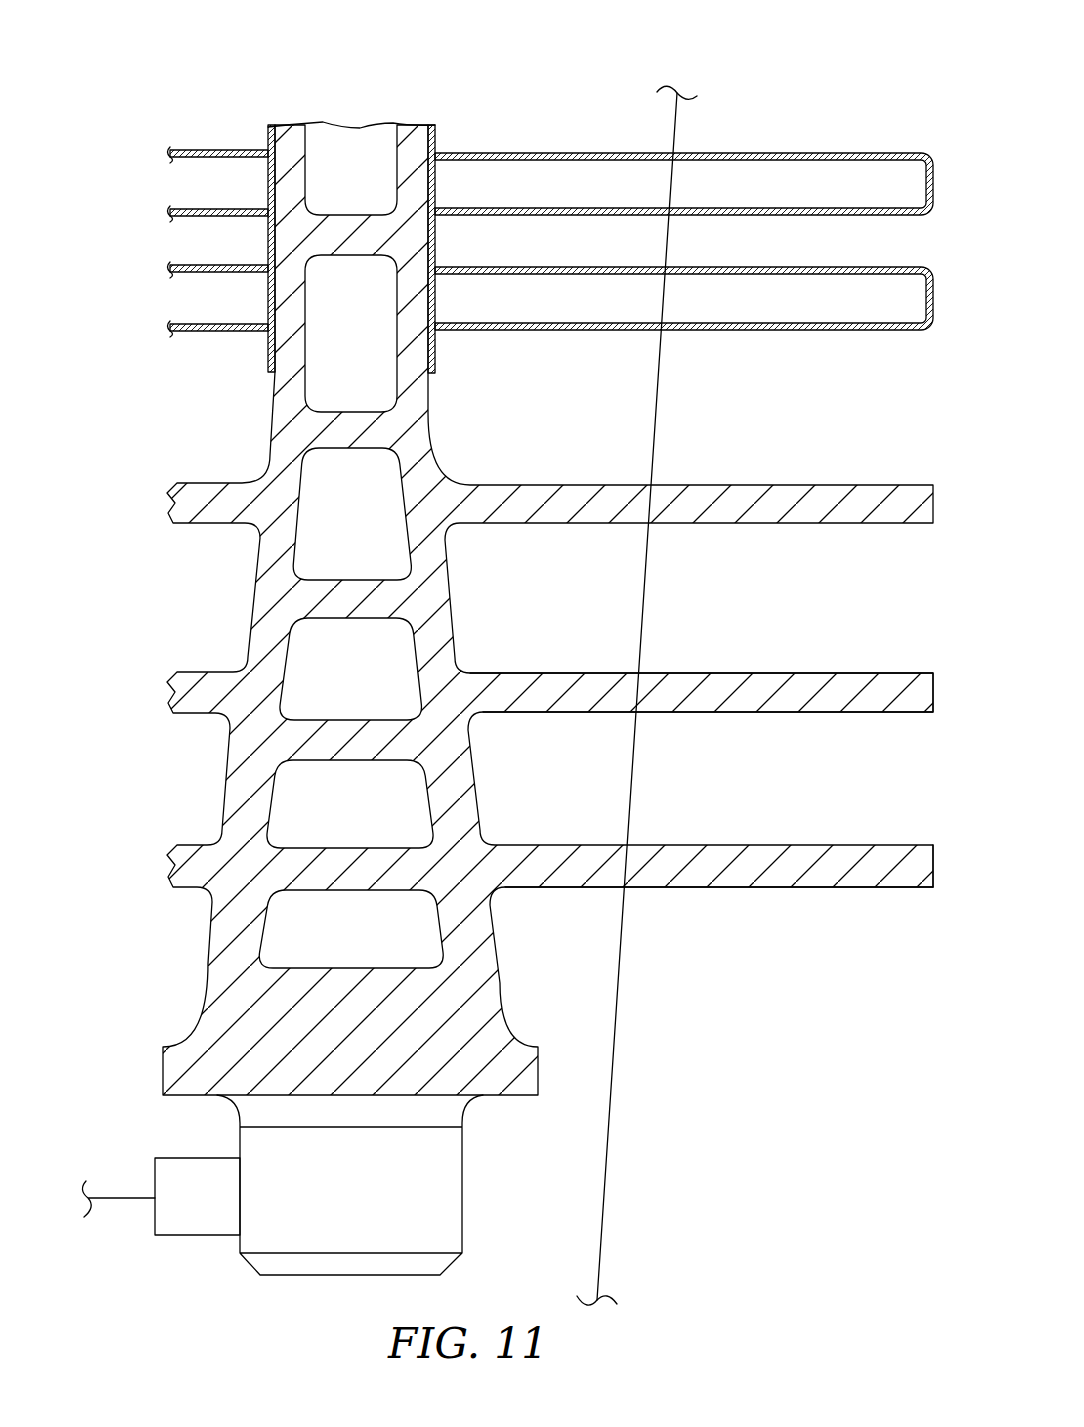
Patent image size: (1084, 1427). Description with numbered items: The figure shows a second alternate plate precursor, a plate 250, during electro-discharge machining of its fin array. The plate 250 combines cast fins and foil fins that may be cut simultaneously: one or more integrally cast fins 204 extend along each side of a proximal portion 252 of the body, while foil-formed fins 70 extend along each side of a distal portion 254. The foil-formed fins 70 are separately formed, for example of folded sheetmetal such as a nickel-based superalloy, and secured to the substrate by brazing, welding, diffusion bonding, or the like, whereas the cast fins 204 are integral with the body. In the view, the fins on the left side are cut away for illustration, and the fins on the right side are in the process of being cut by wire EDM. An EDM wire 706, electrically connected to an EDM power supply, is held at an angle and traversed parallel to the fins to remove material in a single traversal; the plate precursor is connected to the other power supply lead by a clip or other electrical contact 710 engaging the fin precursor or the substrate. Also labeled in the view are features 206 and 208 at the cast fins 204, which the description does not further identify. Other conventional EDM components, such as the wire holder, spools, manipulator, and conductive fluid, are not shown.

The fin arrays 70 is at (212, 140).
The integrally cast fins 204 is at (547, 660).
The fin tip 206 is at (933, 867).
The fin bottom surface 208 is at (625, 862).
The plate 250 is at (488, 698).
The proximal portion 252 is at (200, 785).
The distal portion 254 is at (238, 368).
The EDM wire 706 is at (632, 777).
The electrical contact 710 is at (173, 1213).